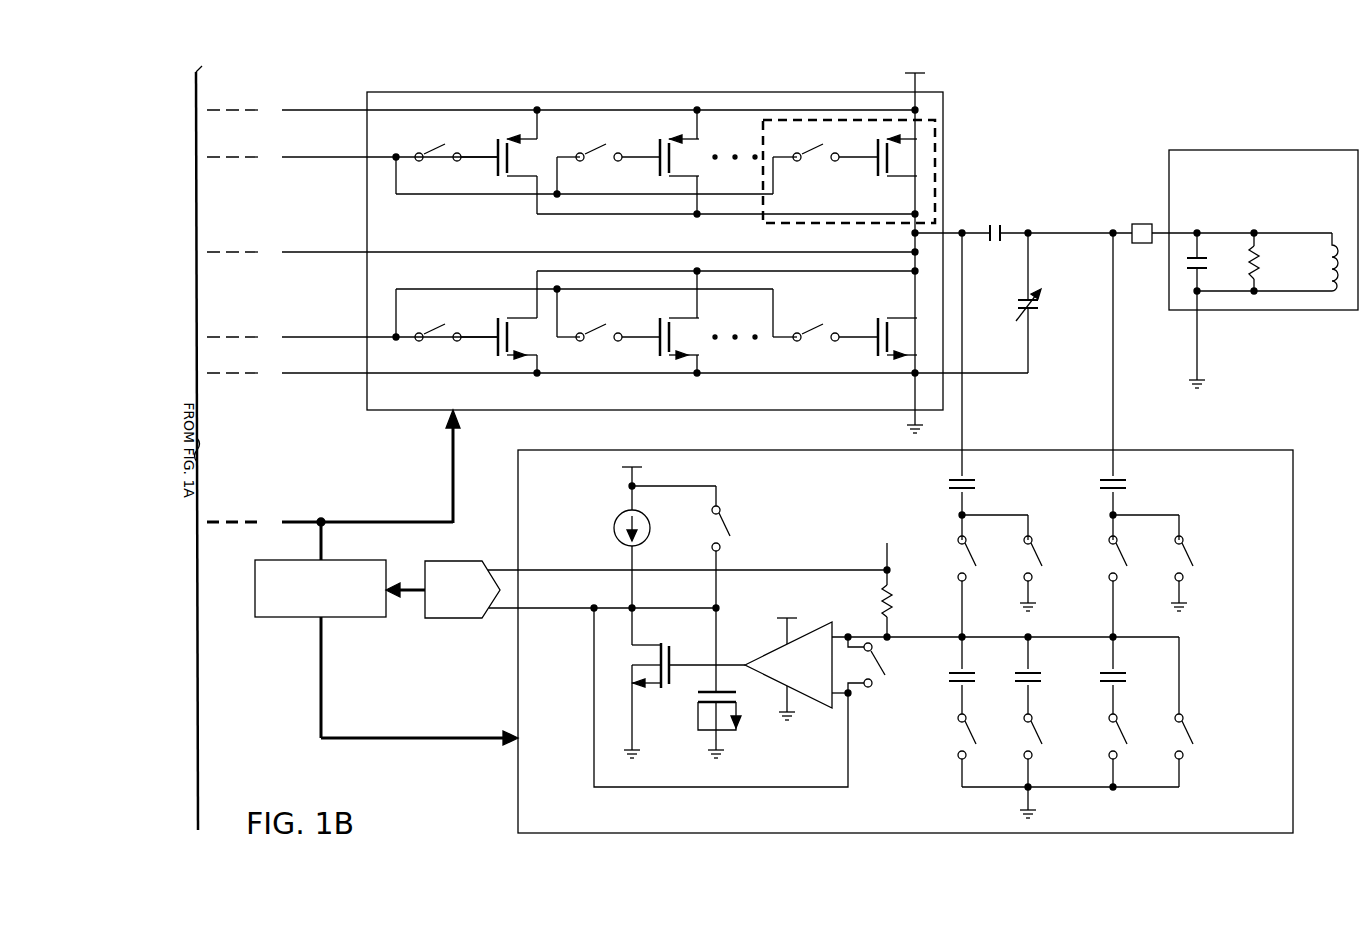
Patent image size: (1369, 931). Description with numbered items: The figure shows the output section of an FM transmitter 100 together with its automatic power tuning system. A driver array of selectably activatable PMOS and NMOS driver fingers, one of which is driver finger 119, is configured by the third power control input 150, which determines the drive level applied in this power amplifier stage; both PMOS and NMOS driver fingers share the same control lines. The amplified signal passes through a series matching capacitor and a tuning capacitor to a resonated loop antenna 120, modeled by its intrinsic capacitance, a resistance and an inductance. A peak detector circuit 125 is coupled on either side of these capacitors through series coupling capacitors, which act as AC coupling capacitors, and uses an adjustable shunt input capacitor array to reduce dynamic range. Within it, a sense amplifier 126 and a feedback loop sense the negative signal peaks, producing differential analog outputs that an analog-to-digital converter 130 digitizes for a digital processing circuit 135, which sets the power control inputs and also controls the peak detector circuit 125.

The FM transmitter 100 is at (1082, 110).
The driver finger 119 is at (866, 205).
The resonated loop antenna 120 is at (1296, 142).
The peak detector circuit 125 is at (923, 533).
The sense amplifier 126 is at (818, 675).
The analog-to-digital converter 130 is at (455, 622).
The digital processing circuit 135 is at (296, 622).
The Power Control-3 150 is at (688, 253).